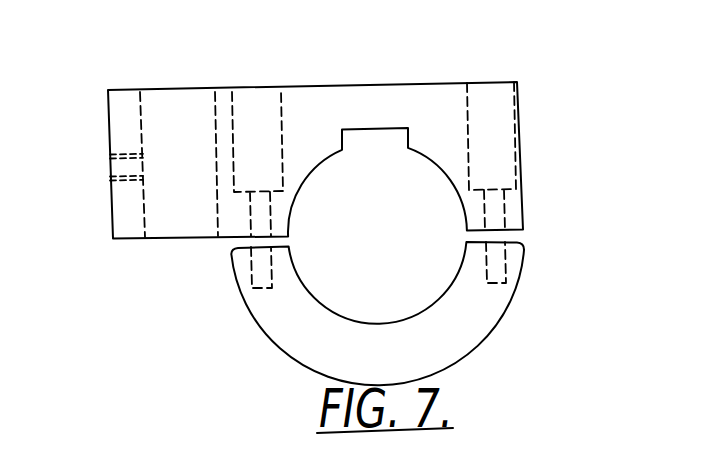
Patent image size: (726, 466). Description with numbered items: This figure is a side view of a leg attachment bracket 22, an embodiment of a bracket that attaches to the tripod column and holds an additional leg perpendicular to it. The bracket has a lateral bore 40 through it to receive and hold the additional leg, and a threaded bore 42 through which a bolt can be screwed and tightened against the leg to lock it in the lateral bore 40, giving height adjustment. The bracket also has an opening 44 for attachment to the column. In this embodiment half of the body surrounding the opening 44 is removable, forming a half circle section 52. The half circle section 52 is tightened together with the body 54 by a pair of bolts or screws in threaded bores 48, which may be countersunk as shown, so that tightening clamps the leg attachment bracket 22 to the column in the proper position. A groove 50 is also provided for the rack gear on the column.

The leg attachment bracket 22 is at (623, 40).
The lateral bore 40 is at (188, 223).
The threaded bore 42 is at (115, 168).
The opening 44 is at (424, 177).
The threaded bores 48 is at (250, 102).
The groove 50 is at (353, 137).
The half circle section 52 is at (448, 338).
The body 54 is at (418, 93).